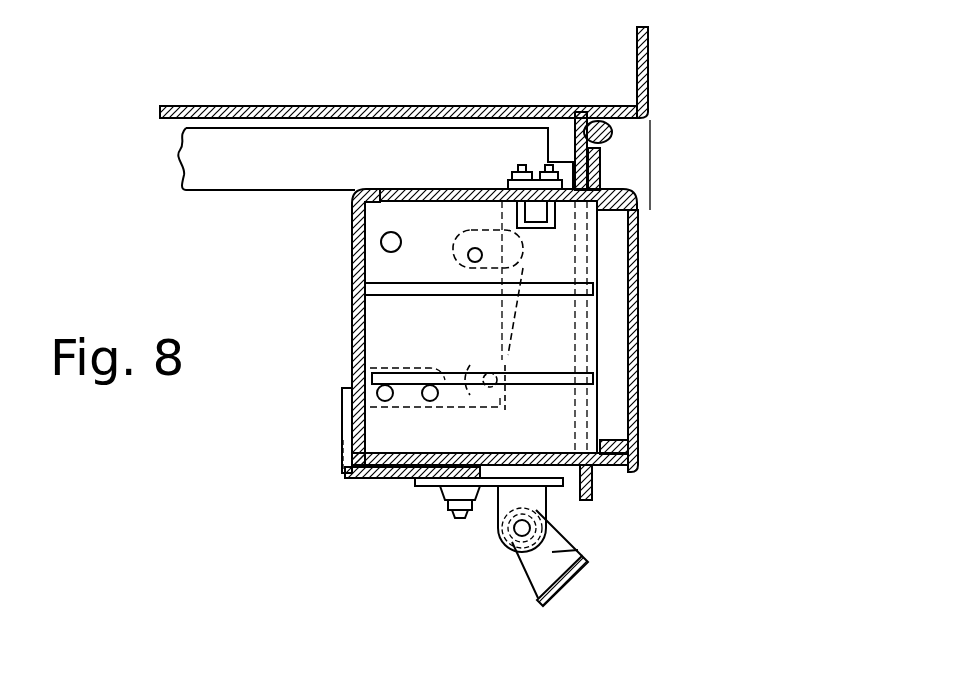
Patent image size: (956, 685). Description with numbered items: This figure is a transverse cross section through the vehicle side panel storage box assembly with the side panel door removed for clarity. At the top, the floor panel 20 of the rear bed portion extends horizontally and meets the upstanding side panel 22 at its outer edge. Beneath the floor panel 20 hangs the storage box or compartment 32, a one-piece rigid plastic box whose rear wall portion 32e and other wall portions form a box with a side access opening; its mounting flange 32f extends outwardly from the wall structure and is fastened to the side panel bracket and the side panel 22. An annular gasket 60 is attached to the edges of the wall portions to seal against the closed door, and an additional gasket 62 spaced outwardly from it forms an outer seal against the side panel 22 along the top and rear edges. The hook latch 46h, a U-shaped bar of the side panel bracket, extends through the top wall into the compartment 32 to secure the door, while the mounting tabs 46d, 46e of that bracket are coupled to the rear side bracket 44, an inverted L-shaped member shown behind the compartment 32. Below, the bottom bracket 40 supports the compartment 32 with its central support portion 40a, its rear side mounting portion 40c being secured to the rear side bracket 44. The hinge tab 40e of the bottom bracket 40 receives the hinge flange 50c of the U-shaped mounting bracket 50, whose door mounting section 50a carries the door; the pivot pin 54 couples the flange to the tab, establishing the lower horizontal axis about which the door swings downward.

The floor panel 20 is at (383, 106).
The side panel 22 is at (650, 65).
The additional gasket 62 is at (612, 133).
The mounting flange 32f is at (600, 163).
The annular gasket 60 is at (637, 196).
The hook latch 46h is at (520, 222).
The storage box or compartment 32 is at (419, 344).
The rear wall portion 32e is at (353, 316).
The rear side bracket 44 is at (405, 265).
The mounting tab 46d is at (490, 242).
The mounting tab 46e is at (490, 360).
The bottom bracket 40 is at (450, 480).
The central support portion 40a is at (386, 480).
The rear side mounting portion 40c is at (340, 445).
The hinge tab 40e is at (540, 508).
The pivot pin 54 is at (510, 538).
The mounting bracket 50 is at (616, 576).
The door mounting section 50a is at (568, 577).
The hinge flange 50c is at (552, 552).